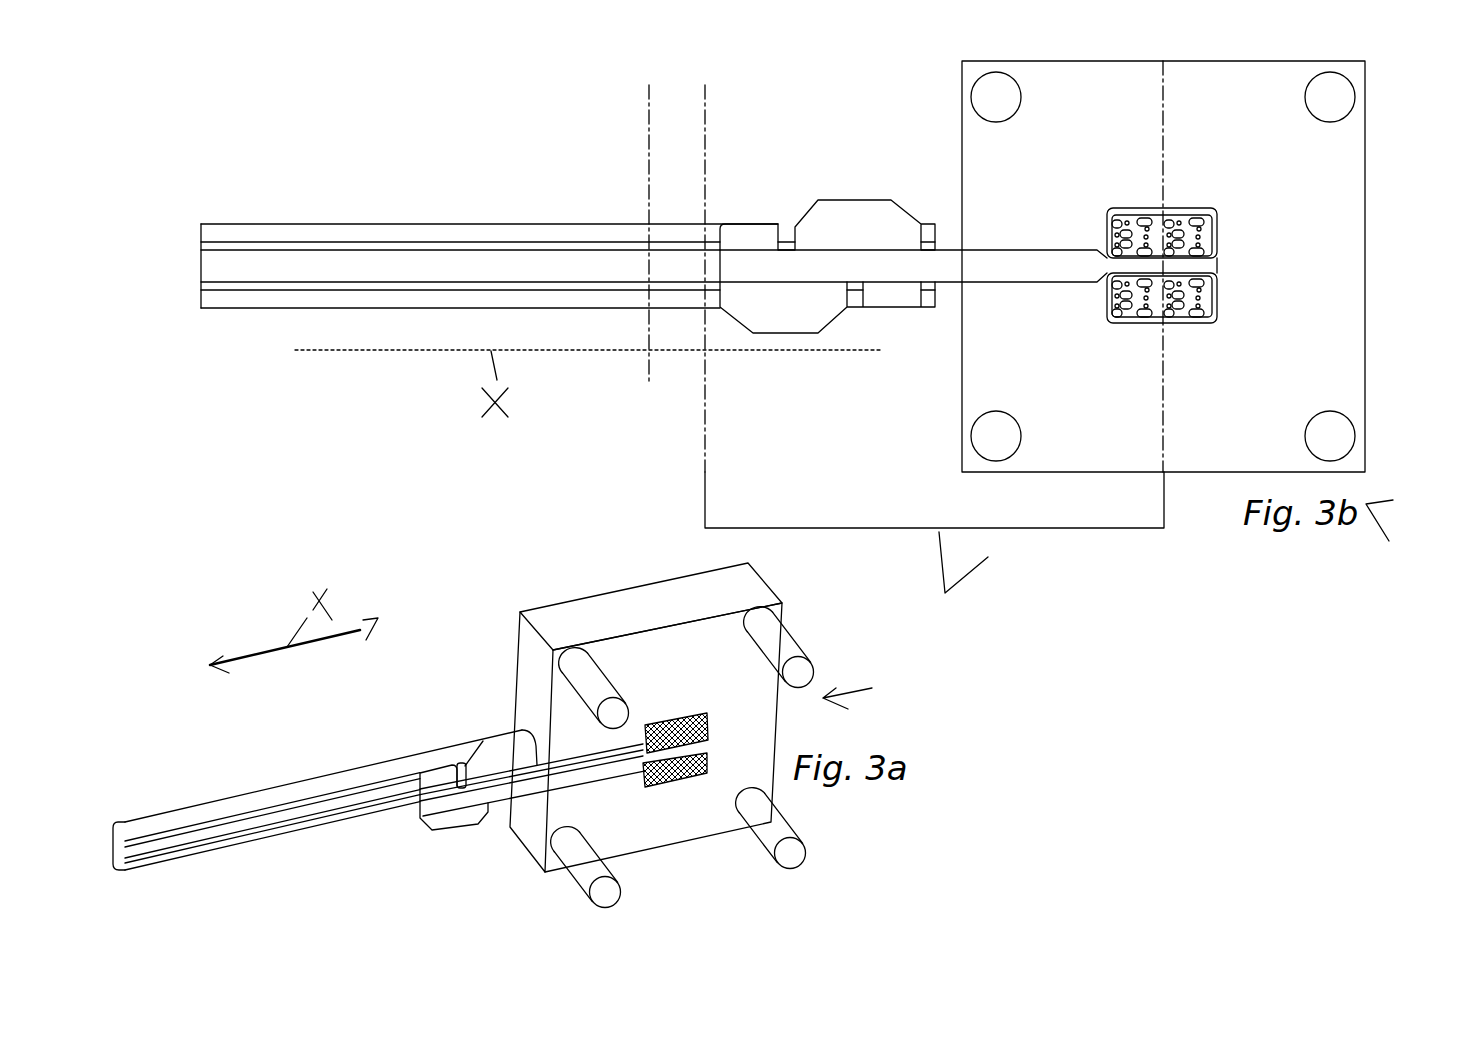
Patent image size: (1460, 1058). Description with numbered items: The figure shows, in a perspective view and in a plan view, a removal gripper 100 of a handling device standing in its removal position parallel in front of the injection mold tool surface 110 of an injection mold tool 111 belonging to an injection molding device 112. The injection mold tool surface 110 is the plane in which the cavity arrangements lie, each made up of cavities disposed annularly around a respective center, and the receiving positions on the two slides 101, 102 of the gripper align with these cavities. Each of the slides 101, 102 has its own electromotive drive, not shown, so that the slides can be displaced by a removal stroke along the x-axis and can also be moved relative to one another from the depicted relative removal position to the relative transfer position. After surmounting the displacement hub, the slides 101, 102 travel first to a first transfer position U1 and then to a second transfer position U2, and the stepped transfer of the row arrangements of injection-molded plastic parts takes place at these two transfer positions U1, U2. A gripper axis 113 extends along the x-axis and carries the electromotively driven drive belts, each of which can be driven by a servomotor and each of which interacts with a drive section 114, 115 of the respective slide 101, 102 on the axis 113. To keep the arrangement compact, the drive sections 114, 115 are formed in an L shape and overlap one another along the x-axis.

In FIG. 3B, the removal gripper 100 is at (1122, 323).
In FIG. 3A, the removal gripper 100 is at (665, 727).
In FIG. 3B, the slide 101 is at (1218, 244).
In FIG. 3B, the slide 102 is at (1117, 214).
In FIG. 3B, the injection mold tool surface 110 is at (1278, 160).
In FIG. 3A, the injection mold tool surface 110 is at (702, 675).
In FIG. 3B, the injection mold tool 111 is at (1198, 470).
In FIG. 3B, the injection molding device 112 is at (1393, 533).
In FIG. 3A, the injection molding device 112 is at (876, 693).
In FIG. 3B, the gripper axis 113 is at (491, 271).
In FIG. 3A, the gripper axis 113 is at (253, 827).
In FIG. 3B, the drive section 114 is at (765, 310).
In FIG. 3A, the drive section 114 is at (453, 820).
In FIG. 3B, the drive section 115 is at (853, 226).
In FIG. 3A, the drive section 115 is at (495, 768).
In FIG. 3B, the first transfer position U1 is at (702, 110).
In FIG. 3B, the second transfer position U2 is at (645, 145).